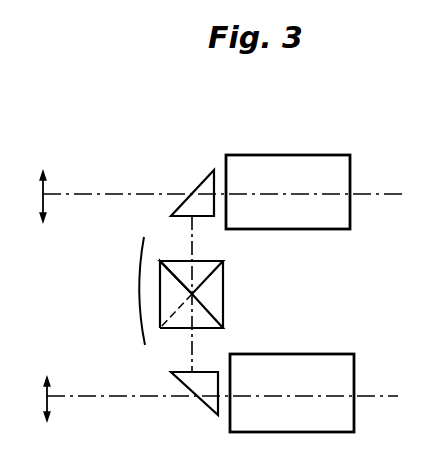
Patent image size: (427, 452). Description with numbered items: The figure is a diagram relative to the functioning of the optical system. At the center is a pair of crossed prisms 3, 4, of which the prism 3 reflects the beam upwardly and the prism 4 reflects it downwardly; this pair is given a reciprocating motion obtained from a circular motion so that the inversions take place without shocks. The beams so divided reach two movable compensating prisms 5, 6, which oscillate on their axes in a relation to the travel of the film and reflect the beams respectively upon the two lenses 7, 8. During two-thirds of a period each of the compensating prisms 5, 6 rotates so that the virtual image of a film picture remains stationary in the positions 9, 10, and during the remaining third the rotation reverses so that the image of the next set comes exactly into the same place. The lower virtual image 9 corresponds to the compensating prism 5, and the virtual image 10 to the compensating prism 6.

The prism 3 is at (191, 277).
The prism 4 is at (191, 295).
The compensating prism 5 is at (194, 393).
The compensating prism 6 is at (192, 193).
The lens 7 is at (292, 393).
The lens 8 is at (288, 192).
The lower virtual image 9 is at (38, 399).
The virtual image 10 is at (32, 196).